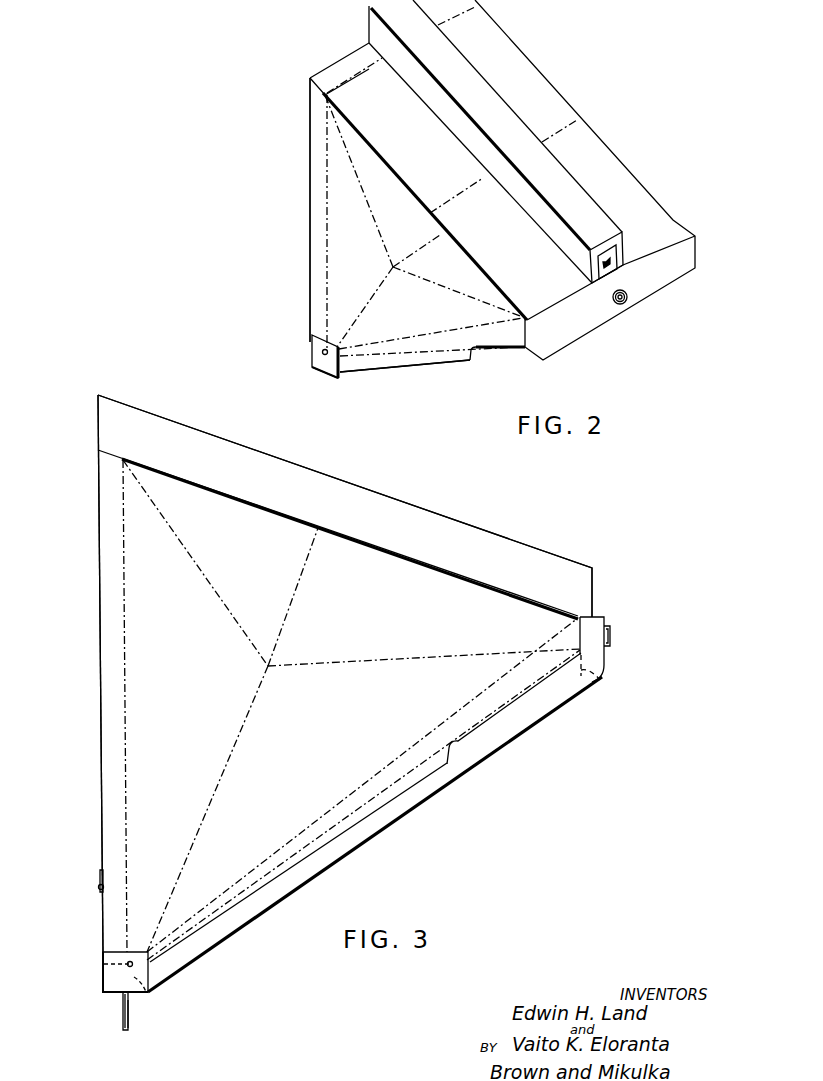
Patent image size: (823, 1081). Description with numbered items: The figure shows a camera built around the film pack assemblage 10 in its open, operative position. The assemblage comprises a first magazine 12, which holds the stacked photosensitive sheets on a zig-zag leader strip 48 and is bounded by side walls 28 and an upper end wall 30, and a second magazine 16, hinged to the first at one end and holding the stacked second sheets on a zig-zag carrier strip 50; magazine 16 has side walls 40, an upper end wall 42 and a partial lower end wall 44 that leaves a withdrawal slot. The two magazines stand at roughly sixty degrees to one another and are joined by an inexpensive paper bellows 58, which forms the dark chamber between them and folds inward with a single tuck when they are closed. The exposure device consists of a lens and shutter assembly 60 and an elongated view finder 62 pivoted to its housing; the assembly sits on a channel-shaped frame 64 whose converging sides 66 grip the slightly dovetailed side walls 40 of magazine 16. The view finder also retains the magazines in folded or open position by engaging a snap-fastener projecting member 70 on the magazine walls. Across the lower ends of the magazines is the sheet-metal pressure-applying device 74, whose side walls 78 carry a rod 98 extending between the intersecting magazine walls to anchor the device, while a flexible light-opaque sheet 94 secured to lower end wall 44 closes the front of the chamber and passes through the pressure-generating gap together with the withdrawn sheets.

In FIG. 2, the film pack assemblage 10 is at (299, 184).
In FIG. 3, the film pack assemblage 10 is at (355, 865).
In FIG. 2, the magazine 12 is at (310, 237).
In FIG. 3, the magazine 12 is at (97, 694).
In FIG. 2, the magazine 16 is at (404, 367).
In FIG. 3, the magazine 16 is at (392, 824).
In FIG. 2, the side walls 28 is at (318, 140).
In FIG. 3, the side walls 28 is at (100, 658).
In FIG. 2, the upper end wall 30 is at (341, 60).
In FIG. 2, the side walls 40 is at (380, 362).
In FIG. 3, the side walls 40 is at (256, 905).
In FIG. 3, the upper end wall 42 is at (603, 682).
In FIG. 3, the partial lower end wall 44 is at (149, 997).
In FIG. 3, the leader strip 48 is at (122, 1022).
In FIG. 3, the carrier strip 50 is at (130, 1022).
In FIG. 2, the bellows 58 is at (424, 225).
In FIG. 3, the bellows 58 is at (351, 710).
In FIG. 2, the lens and shutter assembly 60 is at (595, 316).
In FIG. 3, the lens and shutter assembly 60 is at (612, 647).
In FIG. 2, the view finder 62 is at (496, 141).
In FIG. 3, the view finder 62 is at (510, 543).
In FIG. 2, the frame 64 is at (507, 353).
In FIG. 3, the frame 64 is at (560, 716).
In FIG. 2, the converging sides 66 is at (486, 358).
In FIG. 3, the converging sides 66 is at (490, 738).
In FIG. 3, the projecting member 70 is at (98, 884).
In FIG. 2, the pressure-applying device 74 is at (325, 378).
In FIG. 3, the pressure-applying device 74 is at (100, 992).
In FIG. 2, the side walls 78 is at (318, 364).
In FIG. 3, the side walls 78 is at (110, 974).
In FIG. 3, the sheet 94 is at (131, 1000).
In FIG. 2, the pin or rod 98 is at (322, 350).
In FIG. 3, the pin or rod 98 is at (126, 960).